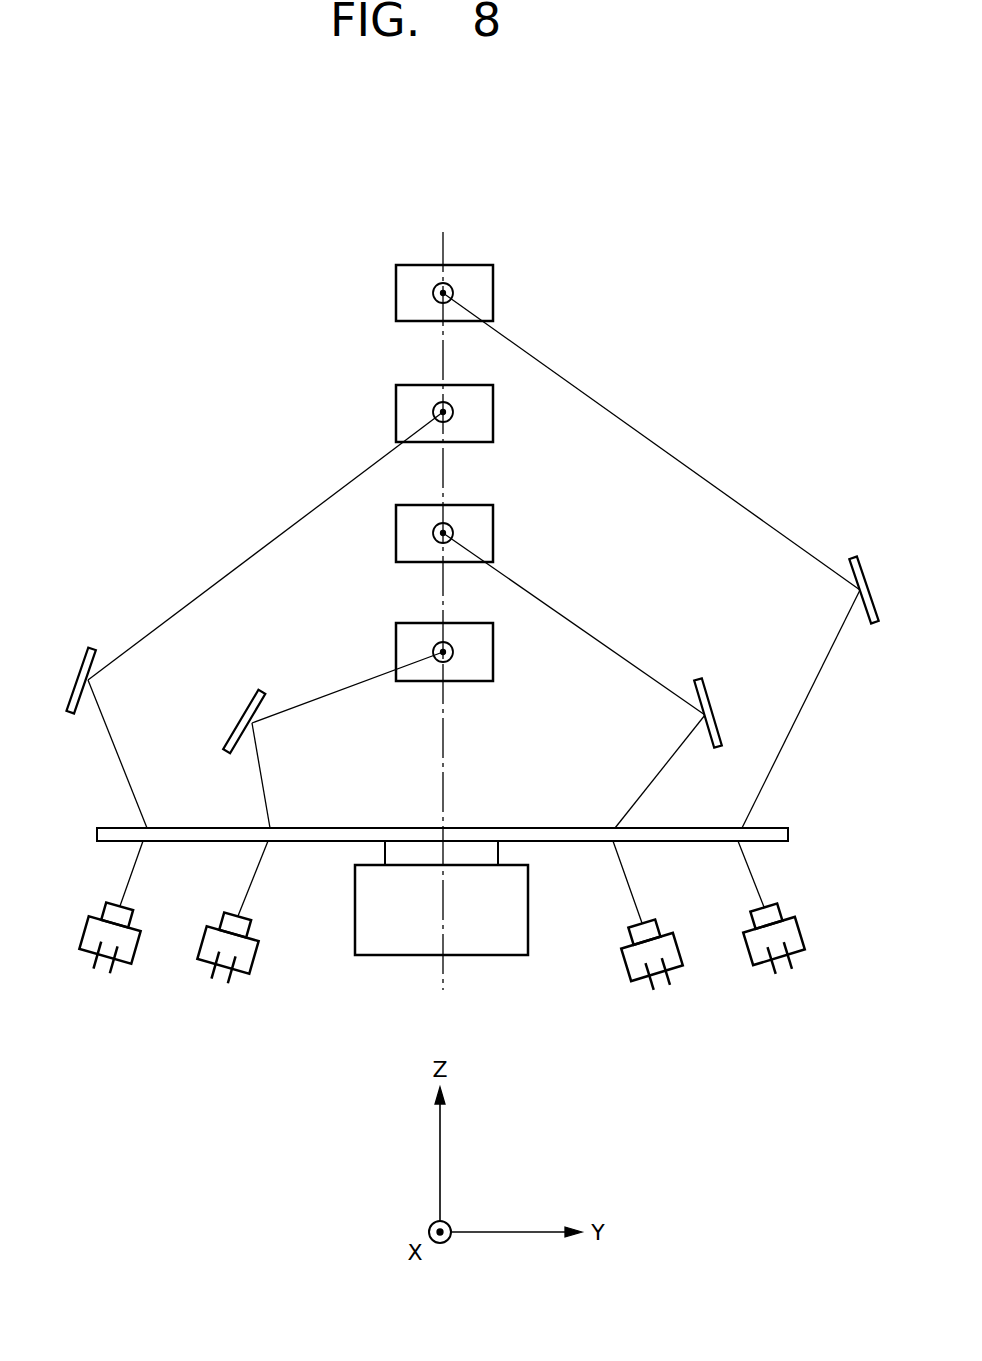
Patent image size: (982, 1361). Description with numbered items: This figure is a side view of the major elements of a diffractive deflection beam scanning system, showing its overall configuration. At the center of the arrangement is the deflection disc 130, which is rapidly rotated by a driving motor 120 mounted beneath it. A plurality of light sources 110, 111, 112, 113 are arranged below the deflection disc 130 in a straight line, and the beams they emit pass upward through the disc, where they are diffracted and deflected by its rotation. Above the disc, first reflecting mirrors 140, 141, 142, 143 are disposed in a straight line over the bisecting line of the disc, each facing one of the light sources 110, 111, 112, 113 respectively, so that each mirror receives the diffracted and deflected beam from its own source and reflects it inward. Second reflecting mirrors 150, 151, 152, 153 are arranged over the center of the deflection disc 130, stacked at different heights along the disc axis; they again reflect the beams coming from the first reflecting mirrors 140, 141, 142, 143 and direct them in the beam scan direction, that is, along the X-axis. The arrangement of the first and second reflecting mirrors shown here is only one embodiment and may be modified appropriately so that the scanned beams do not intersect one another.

The light source 110 is at (753, 968).
The light source 111 is at (633, 982).
The light source 112 is at (248, 983).
The light source 113 is at (125, 967).
The driving motor 120 is at (487, 955).
The deflection disc 130 is at (528, 828).
The first reflecting mirror 140 is at (857, 557).
The first reflecting mirror 141 is at (704, 684).
The first reflecting mirror 142 is at (250, 713).
The first reflecting mirror 143 is at (88, 650).
The second reflecting mirror 150 is at (397, 276).
The second reflecting mirror 151 is at (397, 515).
The second reflecting mirror 152 is at (397, 634).
The second reflecting mirror 153 is at (397, 395).